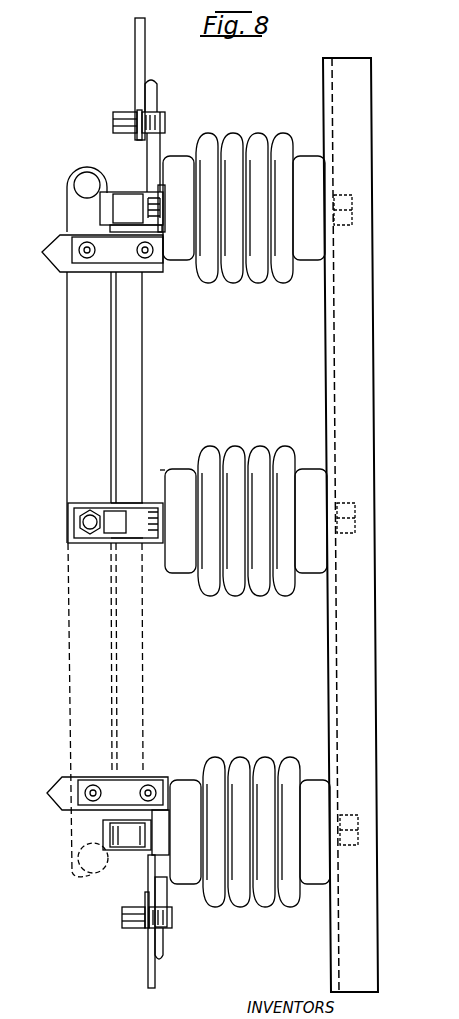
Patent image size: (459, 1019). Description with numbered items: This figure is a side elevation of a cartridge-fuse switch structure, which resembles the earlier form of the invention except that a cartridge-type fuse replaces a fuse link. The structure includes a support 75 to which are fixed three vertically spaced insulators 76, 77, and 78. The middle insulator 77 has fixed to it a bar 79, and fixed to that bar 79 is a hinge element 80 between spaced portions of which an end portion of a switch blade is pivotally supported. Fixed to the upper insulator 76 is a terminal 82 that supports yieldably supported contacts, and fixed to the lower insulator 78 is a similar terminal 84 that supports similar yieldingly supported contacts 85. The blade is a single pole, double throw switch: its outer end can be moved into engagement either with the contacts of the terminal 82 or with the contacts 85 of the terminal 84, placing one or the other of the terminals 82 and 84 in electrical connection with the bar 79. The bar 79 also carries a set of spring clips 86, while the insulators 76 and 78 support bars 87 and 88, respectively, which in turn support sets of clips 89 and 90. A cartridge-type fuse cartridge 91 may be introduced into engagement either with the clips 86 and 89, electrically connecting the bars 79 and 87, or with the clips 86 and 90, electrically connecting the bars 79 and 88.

The support 75 is at (338, 375).
The insulator 76 is at (214, 283).
The insulator 77 is at (215, 593).
The insulator 78 is at (242, 906).
The bar 79 is at (161, 500).
The hinge element 80 is at (67, 543).
The terminal 82 is at (148, 157).
The terminal 84 is at (155, 882).
The contacts 85 is at (62, 783).
The spring clips 86 is at (130, 528).
The bar 87 is at (166, 190).
The bar 88 is at (176, 812).
The clips 89 is at (128, 200).
The clips 90 is at (130, 840).
The fuse cartridge 91 is at (137, 393).